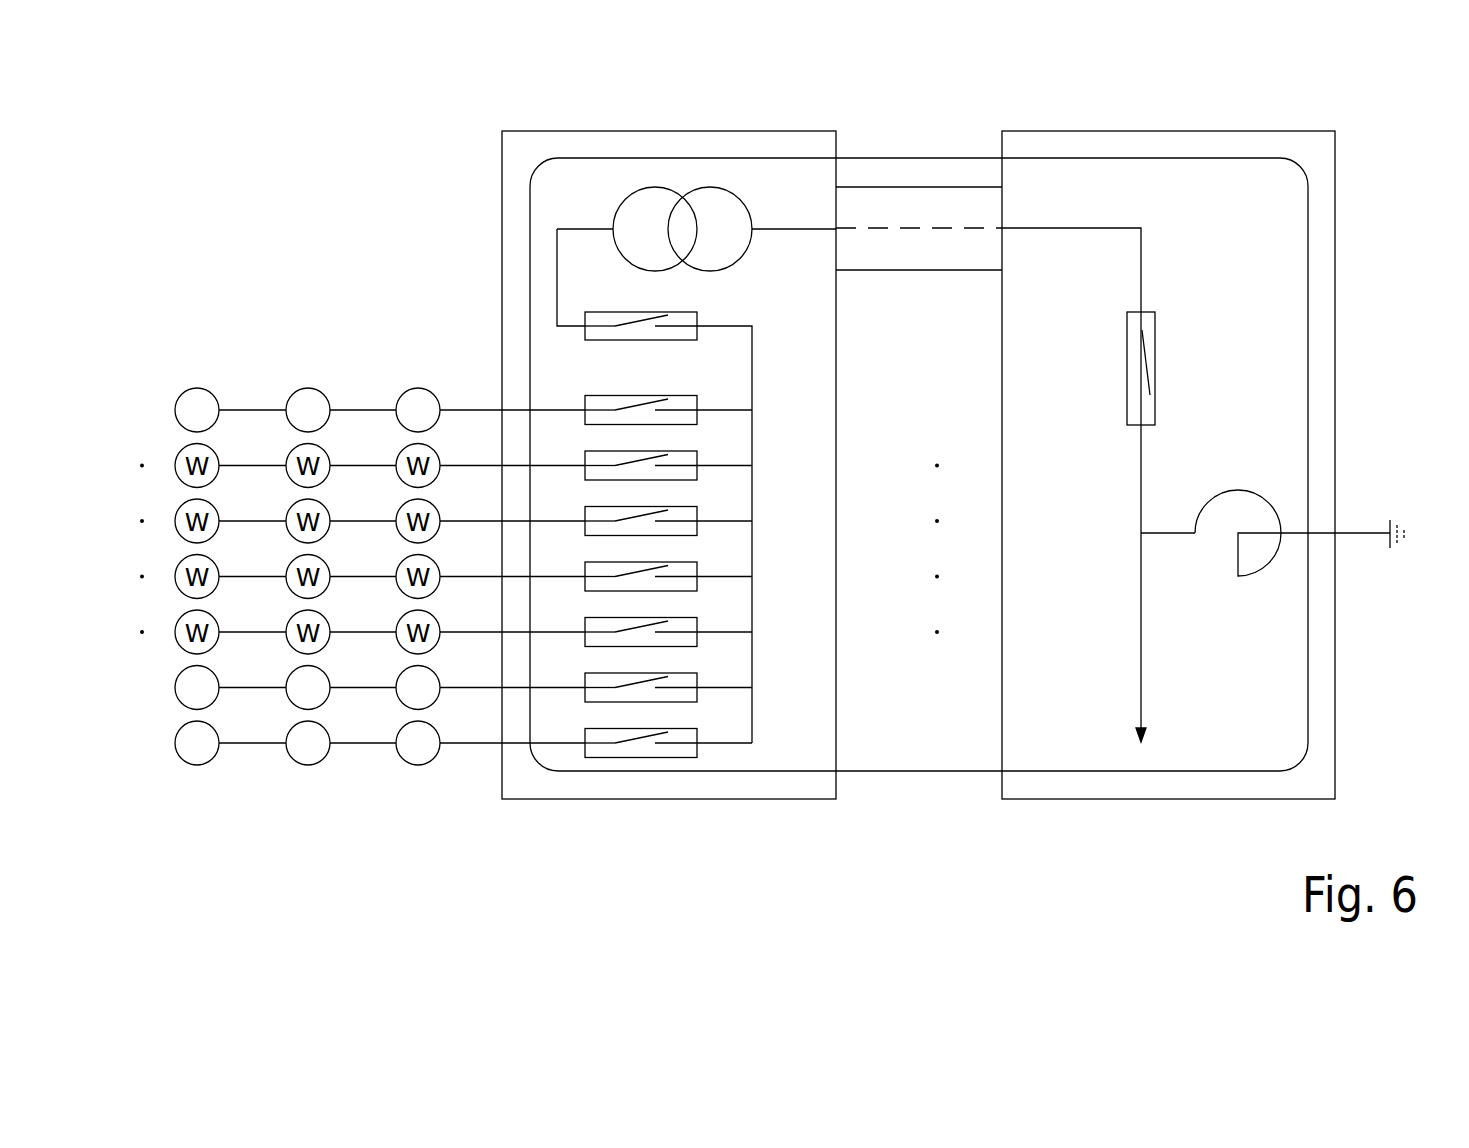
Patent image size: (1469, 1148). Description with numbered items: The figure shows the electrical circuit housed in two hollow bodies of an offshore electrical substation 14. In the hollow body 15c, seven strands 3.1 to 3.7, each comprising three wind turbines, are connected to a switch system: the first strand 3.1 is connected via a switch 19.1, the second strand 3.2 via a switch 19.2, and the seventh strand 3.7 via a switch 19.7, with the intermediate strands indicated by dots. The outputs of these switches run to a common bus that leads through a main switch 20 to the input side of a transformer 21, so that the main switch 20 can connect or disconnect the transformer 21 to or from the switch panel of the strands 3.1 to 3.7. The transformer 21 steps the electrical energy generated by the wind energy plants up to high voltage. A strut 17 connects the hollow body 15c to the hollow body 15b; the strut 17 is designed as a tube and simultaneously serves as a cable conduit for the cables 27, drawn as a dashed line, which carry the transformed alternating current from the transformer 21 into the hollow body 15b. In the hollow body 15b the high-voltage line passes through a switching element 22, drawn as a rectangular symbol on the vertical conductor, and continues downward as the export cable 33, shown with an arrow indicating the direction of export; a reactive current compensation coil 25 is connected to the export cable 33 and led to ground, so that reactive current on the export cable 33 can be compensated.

The strand 3.1 is at (352, 743).
The strand 3.2 is at (352, 688).
The strand 3.7 is at (352, 410).
The electrical substation 14 is at (1308, 203).
The hollow body 15b is at (1075, 800).
The hollow body 15c is at (605, 800).
The strut 17 is at (952, 190).
The switch 19.1 is at (688, 727).
The switch 19.2 is at (688, 672).
The switch 19.7 is at (687, 393).
The main switch 20 is at (602, 310).
The transformer 21 is at (648, 187).
The fuse 22 is at (1157, 330).
The reactive current compensation coil 25 is at (1280, 487).
The cables 27 is at (913, 227).
The export cable 33 is at (1140, 672).